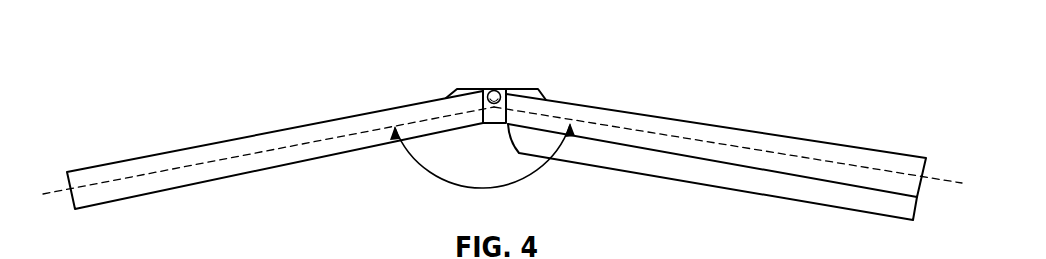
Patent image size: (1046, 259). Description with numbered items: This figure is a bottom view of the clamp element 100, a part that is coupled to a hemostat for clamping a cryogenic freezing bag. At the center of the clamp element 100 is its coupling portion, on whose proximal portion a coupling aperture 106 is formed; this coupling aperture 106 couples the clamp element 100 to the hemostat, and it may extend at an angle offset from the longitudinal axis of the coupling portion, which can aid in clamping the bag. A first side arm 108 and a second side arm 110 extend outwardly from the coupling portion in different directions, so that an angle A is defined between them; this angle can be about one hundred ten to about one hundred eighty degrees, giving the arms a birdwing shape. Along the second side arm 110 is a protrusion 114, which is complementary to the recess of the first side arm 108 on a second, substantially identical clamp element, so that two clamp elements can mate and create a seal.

The clamp element 100 is at (143, 61).
The coupling aperture 106 is at (494, 89).
The first side arm 108 is at (249, 153).
The second side arm 110 is at (727, 142).
The protrusion 114 is at (715, 182).